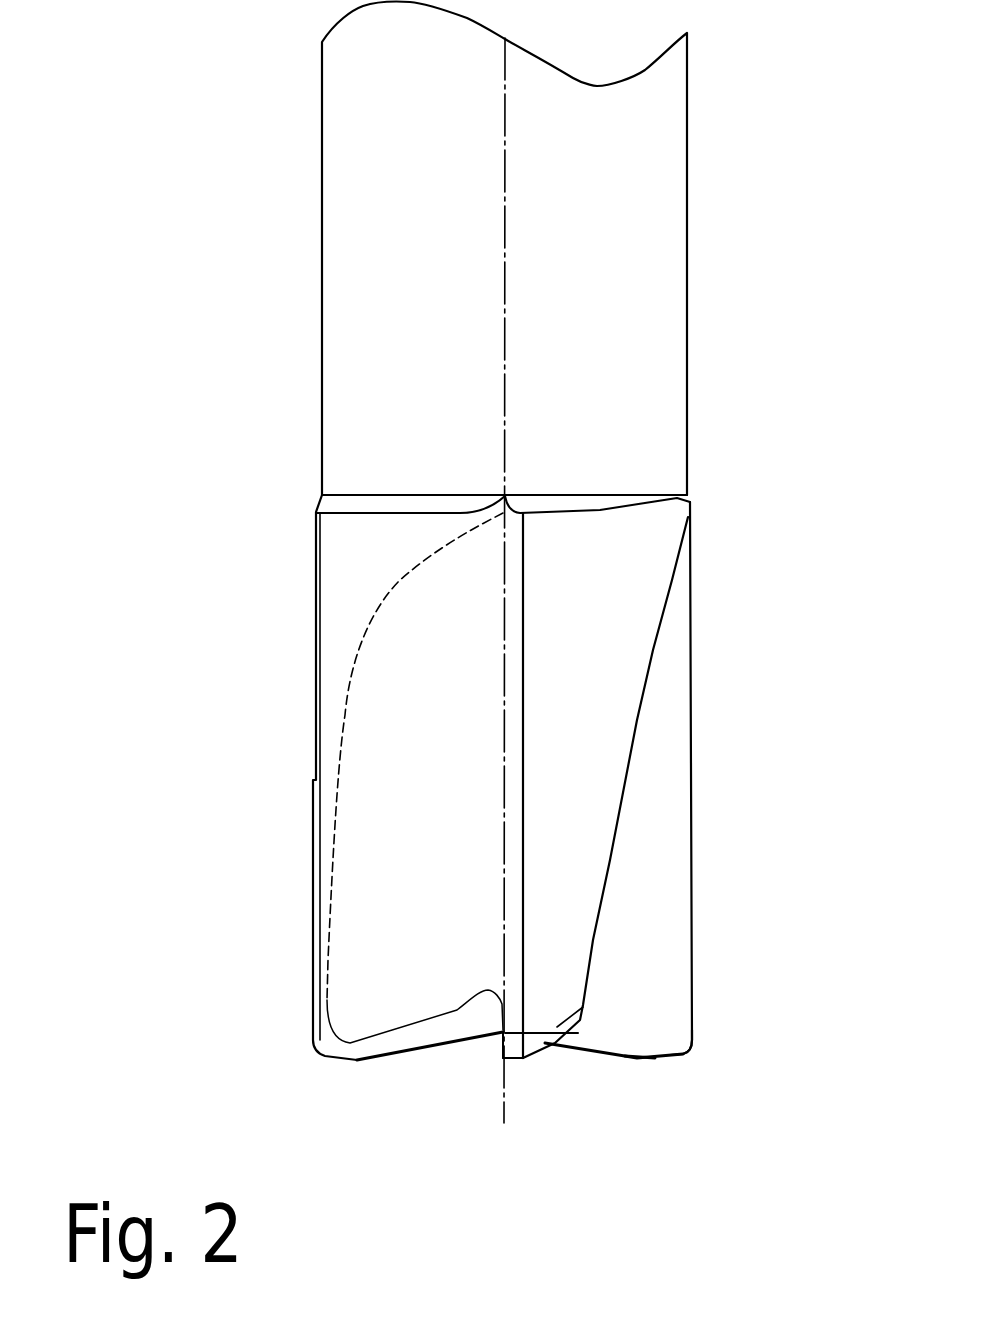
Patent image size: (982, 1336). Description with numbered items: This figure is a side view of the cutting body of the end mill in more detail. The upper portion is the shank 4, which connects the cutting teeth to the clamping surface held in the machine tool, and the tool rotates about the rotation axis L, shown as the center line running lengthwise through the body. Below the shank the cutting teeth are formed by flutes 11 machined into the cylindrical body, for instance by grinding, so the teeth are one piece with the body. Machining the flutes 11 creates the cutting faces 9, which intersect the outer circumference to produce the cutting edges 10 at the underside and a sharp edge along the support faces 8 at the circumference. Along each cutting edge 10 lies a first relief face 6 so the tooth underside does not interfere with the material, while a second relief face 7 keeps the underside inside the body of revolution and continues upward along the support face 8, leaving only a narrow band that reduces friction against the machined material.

The shank 4 is at (690, 418).
The rotation axis L is at (510, 363).
The first relief face 6 is at (512, 1072).
The second relief face 7 is at (415, 537).
The support face 8 is at (520, 689).
The cutting face 9 is at (673, 1038).
The cutting edge 10 is at (643, 1048).
The flute 11 is at (415, 834).